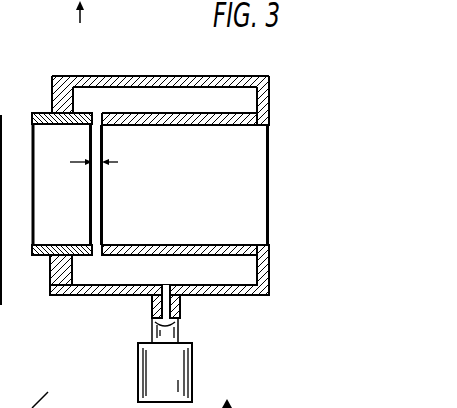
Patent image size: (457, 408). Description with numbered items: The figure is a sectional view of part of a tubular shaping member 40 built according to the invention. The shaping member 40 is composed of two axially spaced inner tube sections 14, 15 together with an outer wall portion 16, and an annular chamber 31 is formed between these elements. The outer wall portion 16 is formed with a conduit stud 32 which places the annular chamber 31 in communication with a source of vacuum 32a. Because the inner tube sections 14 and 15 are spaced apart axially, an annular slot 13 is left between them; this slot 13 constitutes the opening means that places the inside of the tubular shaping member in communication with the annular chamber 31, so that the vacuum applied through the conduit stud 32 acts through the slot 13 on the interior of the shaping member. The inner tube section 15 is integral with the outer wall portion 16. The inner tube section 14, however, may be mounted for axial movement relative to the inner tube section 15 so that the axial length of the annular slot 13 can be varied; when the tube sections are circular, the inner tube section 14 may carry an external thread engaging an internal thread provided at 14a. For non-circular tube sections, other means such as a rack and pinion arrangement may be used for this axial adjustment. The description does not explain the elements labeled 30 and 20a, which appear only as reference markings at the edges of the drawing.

The annular slot 13 is at (98, 157).
The inner tube section 14 is at (43, 112).
The internal thread location 14a is at (60, 260).
The inner tube section 15 is at (198, 113).
The outer wall portion 16 is at (165, 76).
The lead wire 20a is at (77, 389).
The housing wall 30 is at (7, 107).
The annular chamber 31 is at (245, 98).
The conduit stud 32 is at (177, 310).
The source of vacuum 32a is at (157, 385).
The tubular shaping member 40 is at (272, 72).